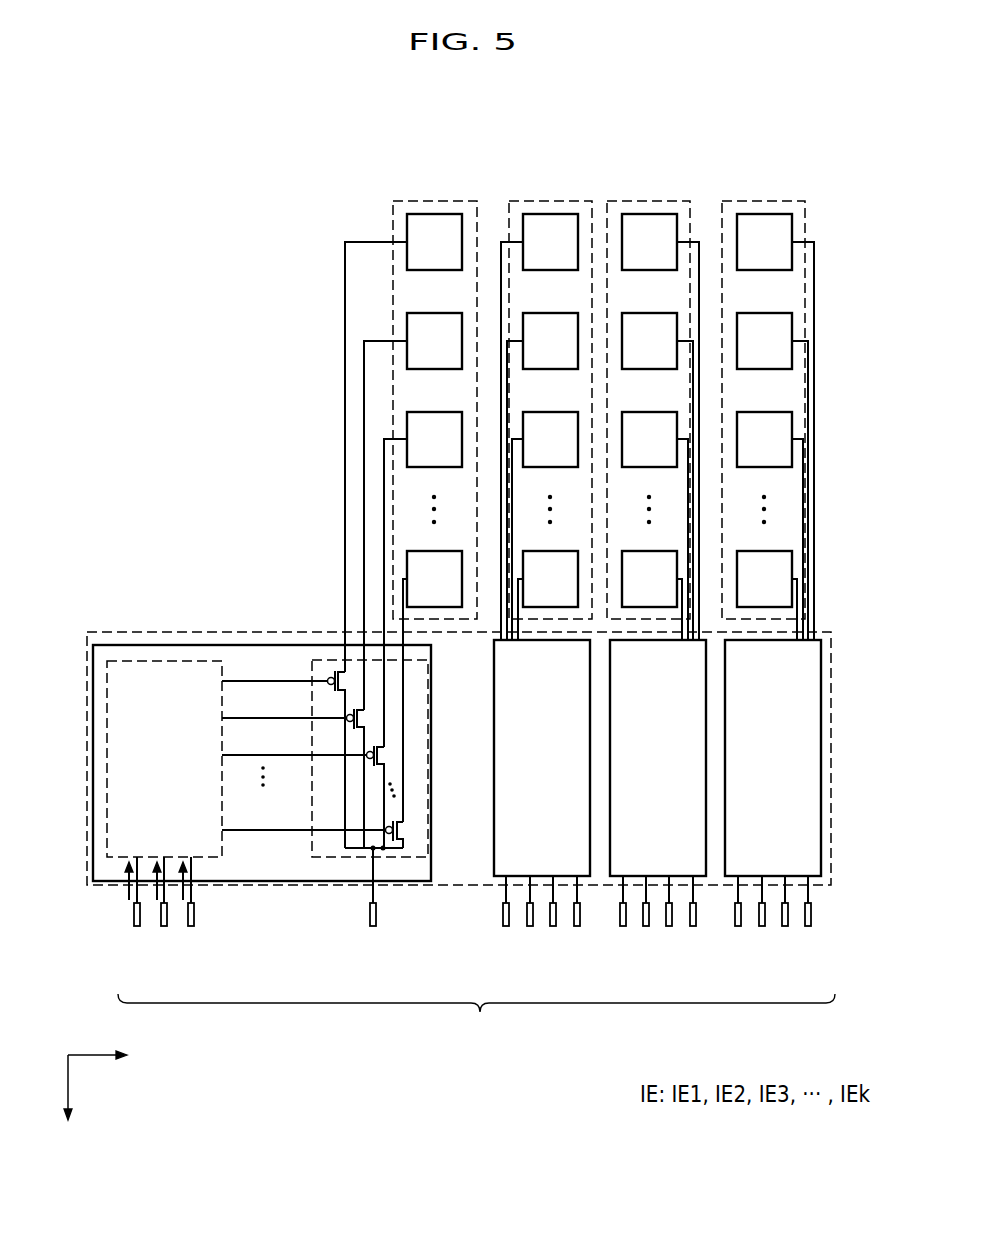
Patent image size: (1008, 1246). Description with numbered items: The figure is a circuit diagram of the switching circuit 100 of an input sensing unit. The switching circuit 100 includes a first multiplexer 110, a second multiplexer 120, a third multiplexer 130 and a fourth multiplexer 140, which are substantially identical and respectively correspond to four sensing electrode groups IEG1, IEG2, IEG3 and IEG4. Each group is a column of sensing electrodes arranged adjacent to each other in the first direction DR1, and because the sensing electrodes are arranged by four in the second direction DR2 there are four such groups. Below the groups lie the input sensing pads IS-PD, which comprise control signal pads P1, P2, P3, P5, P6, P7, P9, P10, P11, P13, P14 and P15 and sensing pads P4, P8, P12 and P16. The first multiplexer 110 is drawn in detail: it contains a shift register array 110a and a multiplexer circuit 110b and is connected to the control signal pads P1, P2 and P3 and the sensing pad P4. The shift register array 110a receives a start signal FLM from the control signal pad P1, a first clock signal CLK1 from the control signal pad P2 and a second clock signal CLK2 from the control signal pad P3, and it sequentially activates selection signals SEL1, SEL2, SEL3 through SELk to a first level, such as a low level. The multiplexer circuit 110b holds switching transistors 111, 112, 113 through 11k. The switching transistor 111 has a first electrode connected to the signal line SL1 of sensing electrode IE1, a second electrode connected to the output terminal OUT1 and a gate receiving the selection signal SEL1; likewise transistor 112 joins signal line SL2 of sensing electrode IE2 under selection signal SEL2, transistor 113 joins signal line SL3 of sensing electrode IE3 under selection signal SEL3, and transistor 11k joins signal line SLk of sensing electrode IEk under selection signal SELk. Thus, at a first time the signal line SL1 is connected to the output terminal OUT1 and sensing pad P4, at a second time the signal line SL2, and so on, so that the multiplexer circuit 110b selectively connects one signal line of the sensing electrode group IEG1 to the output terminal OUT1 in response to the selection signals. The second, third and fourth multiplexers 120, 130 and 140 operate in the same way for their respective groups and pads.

The switching circuit 100 is at (831, 708).
The first multiplexer 110 is at (117, 645).
The shift register array 110a is at (168, 661).
The multiplexer circuit 110b is at (326, 659).
The switching transistor 111 is at (345, 665).
The switching transistor 112 is at (364, 700).
The switching transistor 113 is at (384, 738).
The switching transistor 11k is at (403, 815).
The second multiplexer 120 is at (527, 773).
The third multiplexer 130 is at (643, 773).
The fourth multiplexer 140 is at (758, 773).
The first sensing electrode group IEG1 is at (435, 201).
The second sensing electrode group IEG2 is at (550, 201).
The third sensing electrode group IEG3 is at (648, 201).
The fourth sensing electrode group IEG4 is at (765, 201).
The sensing electrode IE1 is at (407, 224).
The sensing electrode IE2 is at (407, 322).
The sensing electrode IE3 is at (407, 418).
The sensing electrode IEk is at (407, 562).
The first signal line SL1 is at (345, 455).
The second signal line SL2 is at (364, 483).
The signal line SL3 is at (384, 510).
The signal line SLk is at (403, 594).
The first selection signal SEL1 is at (274, 669).
The second selection signal SEL2 is at (284, 704).
The selection signal SEL3 is at (294, 742).
The selection signal SELk is at (303, 816).
The output terminal OUT1 is at (365, 850).
The start signal FLM is at (129, 881).
The first clock signal CLK1 is at (157, 879).
The second clock signal CLK2 is at (183, 879).
The control signal pad P1 is at (137, 926).
The control signal pad P2 is at (164, 926).
The control signal pad P3 is at (191, 926).
The sensing pad P4 is at (373, 926).
The control signal pad P5 is at (506, 926).
The control signal pad P6 is at (530, 926).
The control signal pad P7 is at (553, 926).
The sensing pad P8 is at (577, 926).
The control signal pad P9 is at (623, 926).
The control signal pad P10 is at (646, 926).
The control signal pad P11 is at (669, 926).
The sensing pad P12 is at (693, 926).
The control signal pad P13 is at (738, 926).
The control signal pad P14 is at (762, 926).
The control signal pad P15 is at (785, 926).
The sensing pad P16 is at (808, 926).
The input sensing pads IS-PD is at (476, 1014).
The first direction DR1 is at (69, 1100).
The second direction DR2 is at (119, 1055).